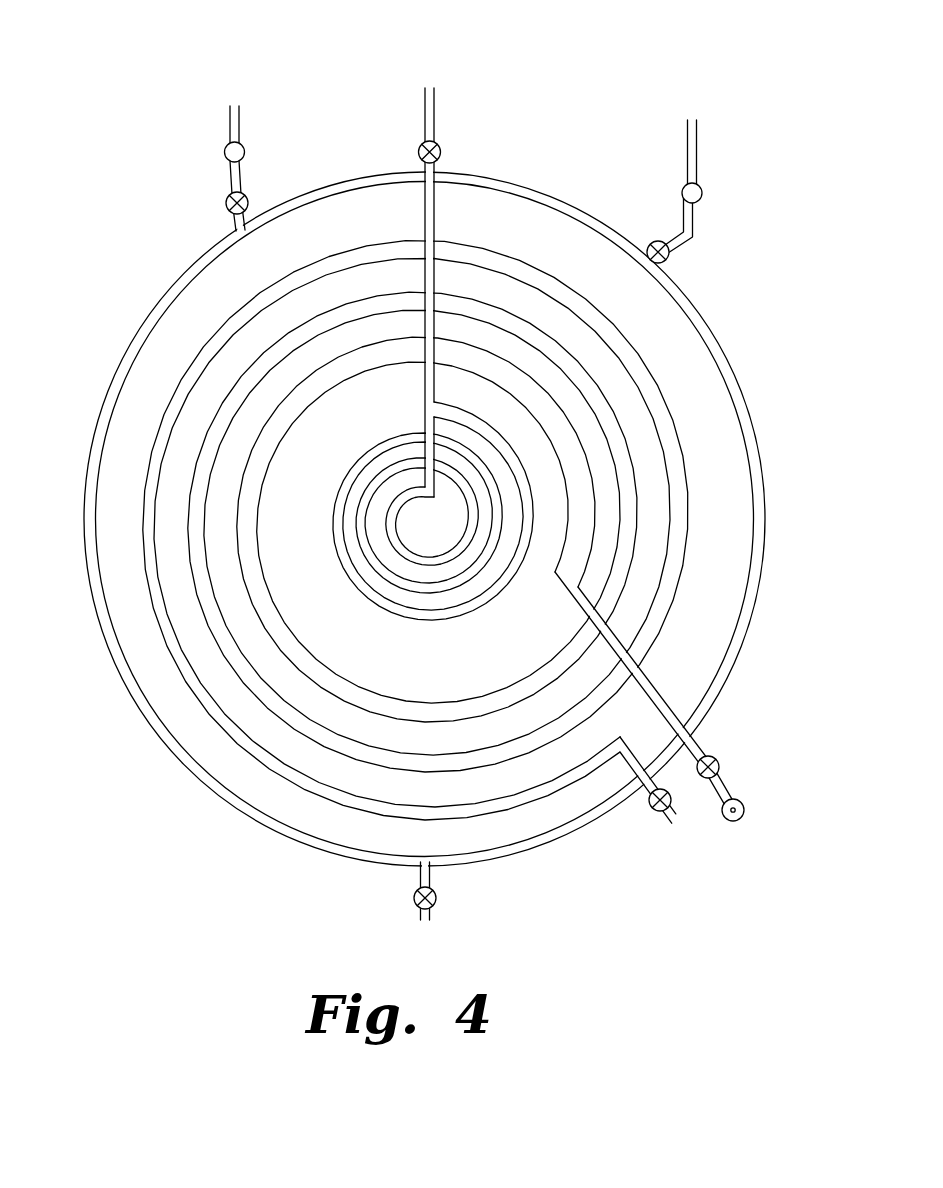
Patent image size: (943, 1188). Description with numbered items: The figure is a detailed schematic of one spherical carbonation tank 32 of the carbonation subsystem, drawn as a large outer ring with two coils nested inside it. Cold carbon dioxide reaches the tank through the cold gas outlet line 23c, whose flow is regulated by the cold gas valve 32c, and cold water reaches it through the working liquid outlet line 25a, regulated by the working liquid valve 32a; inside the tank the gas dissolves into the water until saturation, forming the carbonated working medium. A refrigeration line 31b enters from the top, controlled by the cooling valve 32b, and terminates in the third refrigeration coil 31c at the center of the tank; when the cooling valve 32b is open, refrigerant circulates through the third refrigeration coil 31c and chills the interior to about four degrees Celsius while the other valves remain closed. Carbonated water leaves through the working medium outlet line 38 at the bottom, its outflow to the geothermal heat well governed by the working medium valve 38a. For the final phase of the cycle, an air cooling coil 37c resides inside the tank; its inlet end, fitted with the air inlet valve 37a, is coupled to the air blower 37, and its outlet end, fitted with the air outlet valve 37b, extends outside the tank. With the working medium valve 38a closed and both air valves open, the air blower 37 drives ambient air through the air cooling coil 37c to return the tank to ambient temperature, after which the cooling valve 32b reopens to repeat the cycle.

The cold gas outlet line 23c is at (230, 120).
The working liquid outlet line 25a is at (699, 128).
The refrigeration line 31b is at (429, 96).
The third refrigeration coil 31c is at (430, 622).
The carbonation tank 32 is at (106, 680).
The working liquid valve 32a is at (670, 253).
The cooling valve 32b is at (442, 149).
The cold gas valve 32c is at (226, 201).
The air blower 37 is at (744, 807).
The air inlet valve 37a is at (716, 756).
The air outlet valve 37b is at (658, 812).
The air cooling coil 37c is at (689, 458).
The working medium outlet line 38 is at (414, 898).
The working medium valve 38a is at (436, 899).